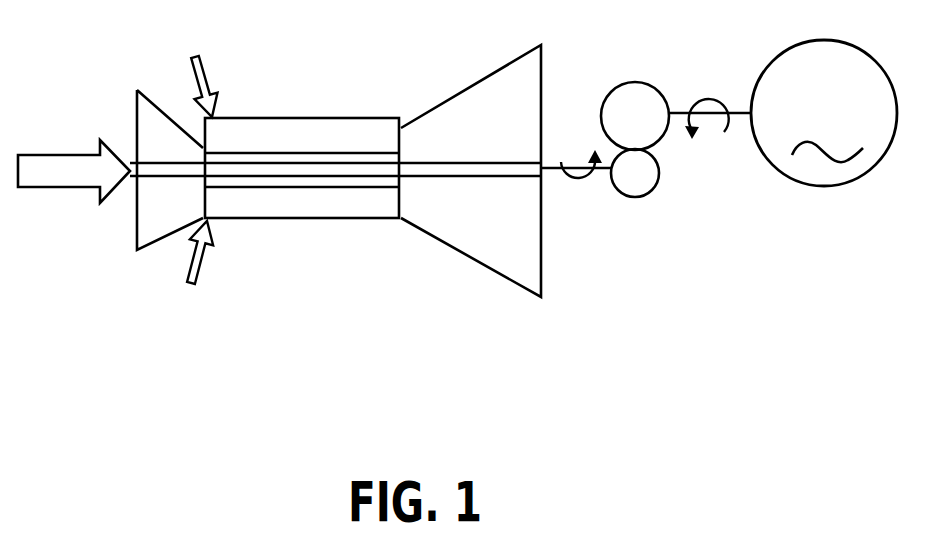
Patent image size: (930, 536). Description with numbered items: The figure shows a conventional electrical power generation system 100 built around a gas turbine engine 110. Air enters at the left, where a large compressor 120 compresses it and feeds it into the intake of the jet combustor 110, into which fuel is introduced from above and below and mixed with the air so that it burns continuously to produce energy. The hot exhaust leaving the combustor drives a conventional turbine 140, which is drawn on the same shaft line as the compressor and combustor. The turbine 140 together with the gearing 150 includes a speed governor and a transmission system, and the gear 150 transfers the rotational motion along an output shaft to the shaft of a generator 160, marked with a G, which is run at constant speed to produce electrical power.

The electrical power generation system 100 is at (378, 368).
The gas turbine engine 110 is at (388, 221).
The compressor 120 is at (134, 241).
The turbine 140 is at (503, 280).
The gearing 150 is at (648, 197).
The generator 160 is at (837, 187).